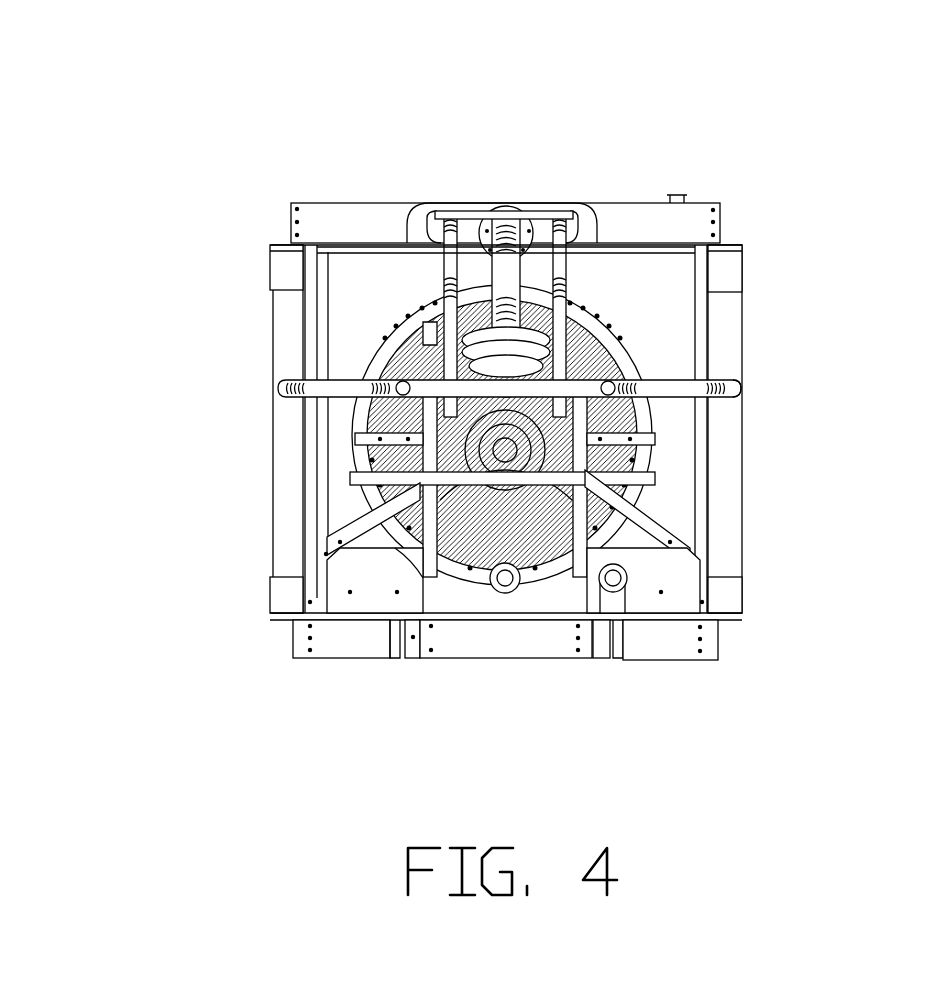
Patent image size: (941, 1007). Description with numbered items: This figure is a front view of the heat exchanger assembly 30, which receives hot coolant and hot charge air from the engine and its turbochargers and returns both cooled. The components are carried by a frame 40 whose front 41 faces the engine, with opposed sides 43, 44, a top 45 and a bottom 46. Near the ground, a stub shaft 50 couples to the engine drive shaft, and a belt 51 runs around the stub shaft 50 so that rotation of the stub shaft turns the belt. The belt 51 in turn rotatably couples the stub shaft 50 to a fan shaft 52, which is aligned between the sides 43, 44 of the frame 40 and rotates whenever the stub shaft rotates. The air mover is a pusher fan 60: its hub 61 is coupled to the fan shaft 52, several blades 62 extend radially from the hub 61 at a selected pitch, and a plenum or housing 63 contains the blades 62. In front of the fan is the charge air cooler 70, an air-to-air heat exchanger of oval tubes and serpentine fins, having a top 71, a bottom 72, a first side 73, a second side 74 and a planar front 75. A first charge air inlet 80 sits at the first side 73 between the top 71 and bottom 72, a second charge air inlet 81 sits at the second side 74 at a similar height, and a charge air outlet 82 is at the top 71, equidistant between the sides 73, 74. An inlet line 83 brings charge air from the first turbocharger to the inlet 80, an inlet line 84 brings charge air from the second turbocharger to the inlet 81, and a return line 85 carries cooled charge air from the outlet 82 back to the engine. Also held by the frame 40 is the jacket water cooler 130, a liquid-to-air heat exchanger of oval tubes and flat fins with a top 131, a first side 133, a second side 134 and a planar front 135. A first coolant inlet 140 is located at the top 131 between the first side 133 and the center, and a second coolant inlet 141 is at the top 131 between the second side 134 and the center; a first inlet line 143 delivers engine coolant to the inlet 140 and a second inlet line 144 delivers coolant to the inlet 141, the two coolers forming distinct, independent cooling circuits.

The heat exchanger assembly 30 is at (782, 228).
The frame 40 is at (524, 705).
The front 41 is at (352, 636).
The side 43 is at (293, 646).
The side 44 is at (720, 640).
The top 45 is at (332, 204).
The bottom 46 is at (523, 660).
The stub shaft 50 is at (508, 588).
The belt 51 is at (475, 592).
The fan shaft 52 is at (590, 478).
The fan 60 is at (422, 345).
The hub 61 is at (600, 373).
The blades 62 is at (396, 335).
The plenum or housing 63 is at (610, 382).
The charge air cooler 70 is at (469, 404).
The top 71 is at (458, 207).
The bottom 72 is at (282, 606).
The first side 73 is at (272, 290).
The second side 74 is at (740, 420).
The front 75 is at (184, 416).
The first charge air inlet 80 is at (445, 411).
The second charge air inlet 81 is at (736, 392).
The charge air outlet 82 is at (506, 265).
The inlet line 83 is at (290, 397).
The inlet line 84 is at (690, 397).
The return line 85 is at (478, 212).
The jacket water cooler 130 is at (698, 210).
The top 131 is at (503, 143).
The first side 133 is at (283, 210).
The second side 134 is at (724, 220).
The front 135 is at (622, 243).
The first coolant inlet 140 is at (440, 240).
The second coolant inlet 141 is at (562, 240).
The first inlet line 143 is at (428, 332).
The second inlet line 144 is at (612, 243).